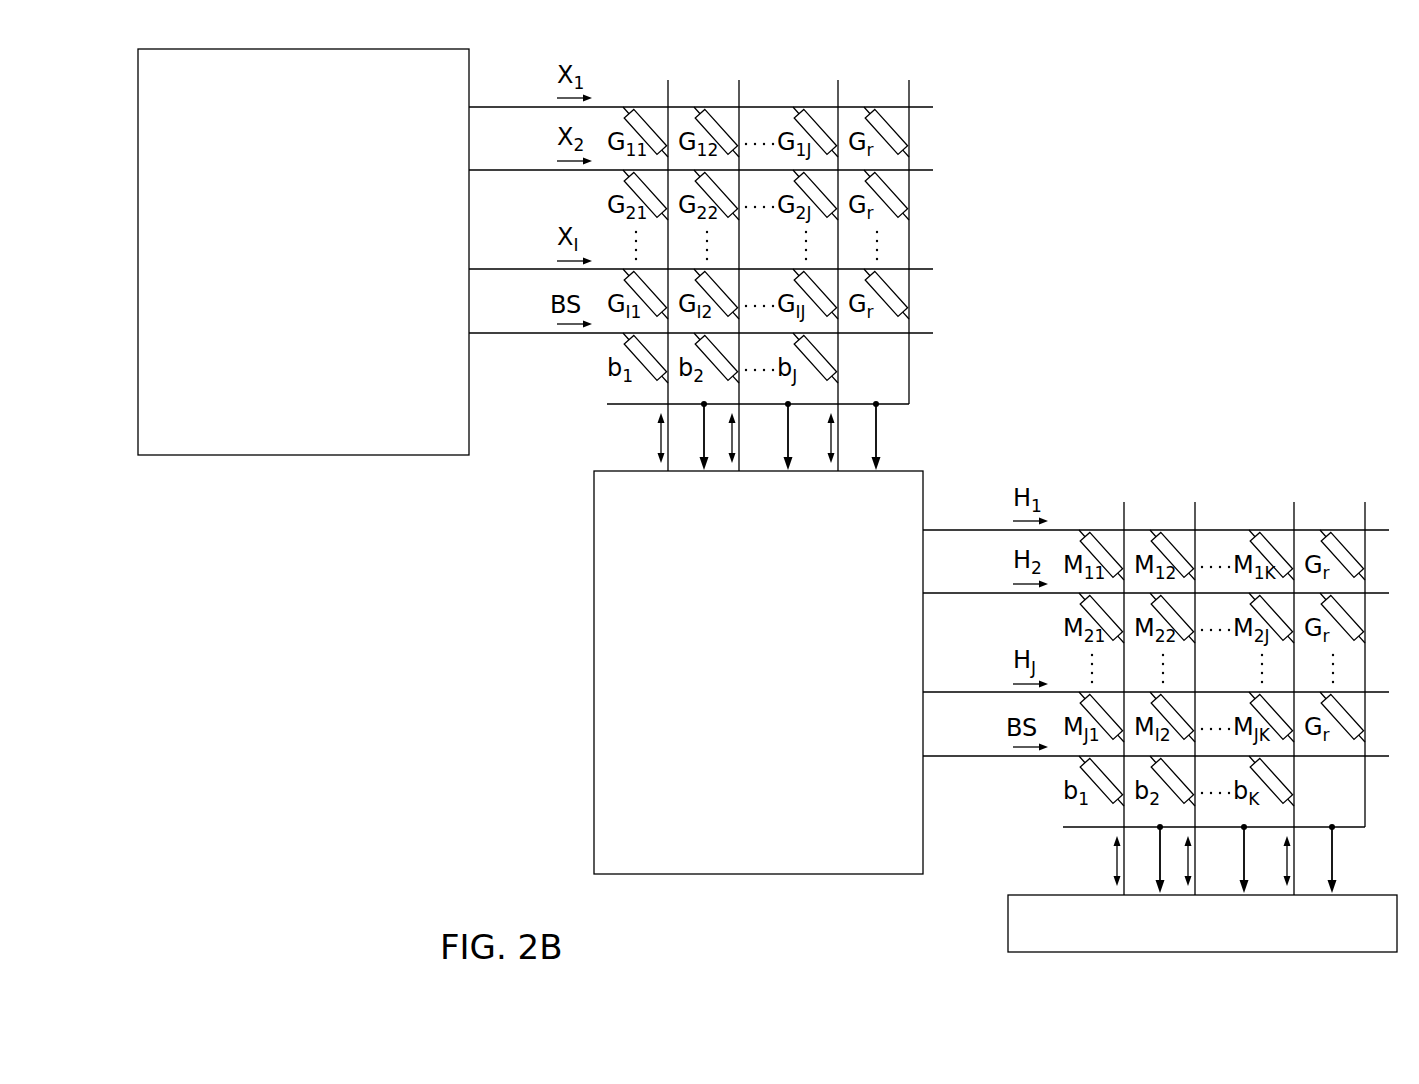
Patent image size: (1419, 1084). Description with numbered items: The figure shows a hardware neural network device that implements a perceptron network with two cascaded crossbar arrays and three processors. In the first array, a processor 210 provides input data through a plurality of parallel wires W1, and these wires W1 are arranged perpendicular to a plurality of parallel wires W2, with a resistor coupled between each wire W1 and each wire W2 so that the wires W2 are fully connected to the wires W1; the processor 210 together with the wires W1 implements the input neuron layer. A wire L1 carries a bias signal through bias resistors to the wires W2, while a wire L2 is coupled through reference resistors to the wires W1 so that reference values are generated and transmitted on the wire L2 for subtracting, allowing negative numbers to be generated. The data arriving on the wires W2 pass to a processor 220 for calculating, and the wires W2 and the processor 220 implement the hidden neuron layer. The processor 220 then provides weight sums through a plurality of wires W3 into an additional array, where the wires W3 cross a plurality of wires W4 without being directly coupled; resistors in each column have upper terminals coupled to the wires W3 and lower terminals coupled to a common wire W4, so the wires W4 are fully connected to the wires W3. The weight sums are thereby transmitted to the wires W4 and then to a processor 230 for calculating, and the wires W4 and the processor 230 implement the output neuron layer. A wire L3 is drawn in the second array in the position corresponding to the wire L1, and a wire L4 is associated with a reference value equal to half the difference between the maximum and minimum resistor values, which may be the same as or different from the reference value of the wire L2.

The processor 210 is at (301, 455).
The processor 220 is at (594, 672).
The processor 230 is at (1008, 905).
The wires W1 is at (701, 154).
The wire L1 is at (512, 333).
The wires W2 is at (764, 255).
The wire L2 is at (918, 222).
The wires W3 is at (1156, 577).
The second bias line L3 is at (968, 756).
The wires W4 is at (1220, 679).
The wire L4 is at (1374, 645).